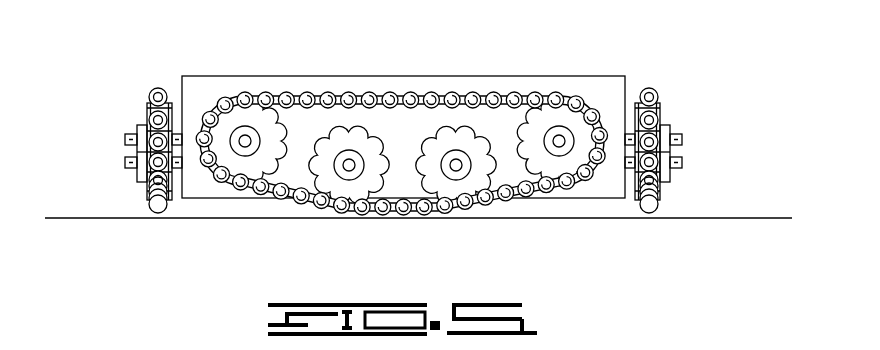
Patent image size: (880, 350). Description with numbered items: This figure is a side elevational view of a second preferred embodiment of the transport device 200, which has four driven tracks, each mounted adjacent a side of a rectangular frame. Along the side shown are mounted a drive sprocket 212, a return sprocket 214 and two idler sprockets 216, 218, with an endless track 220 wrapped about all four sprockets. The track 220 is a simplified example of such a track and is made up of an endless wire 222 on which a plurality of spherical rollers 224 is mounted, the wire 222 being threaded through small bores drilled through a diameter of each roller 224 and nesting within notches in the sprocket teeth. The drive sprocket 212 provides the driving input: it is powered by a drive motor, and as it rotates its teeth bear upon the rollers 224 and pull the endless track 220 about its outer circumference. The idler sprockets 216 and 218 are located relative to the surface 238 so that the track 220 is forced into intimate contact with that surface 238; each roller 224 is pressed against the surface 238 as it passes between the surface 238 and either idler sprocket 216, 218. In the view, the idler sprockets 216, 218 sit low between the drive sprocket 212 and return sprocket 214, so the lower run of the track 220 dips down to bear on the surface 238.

The transport device 200 is at (553, 50).
The drive sprocket 212 is at (532, 92).
The return sprocket 214 is at (277, 112).
The idler sprocket 216 is at (365, 130).
The idler sprocket 218 is at (470, 133).
The endless track 220 is at (401, 119).
The endless wire 222 is at (468, 92).
The spherical rollers 224 is at (391, 92).
The surface 238 is at (710, 217).